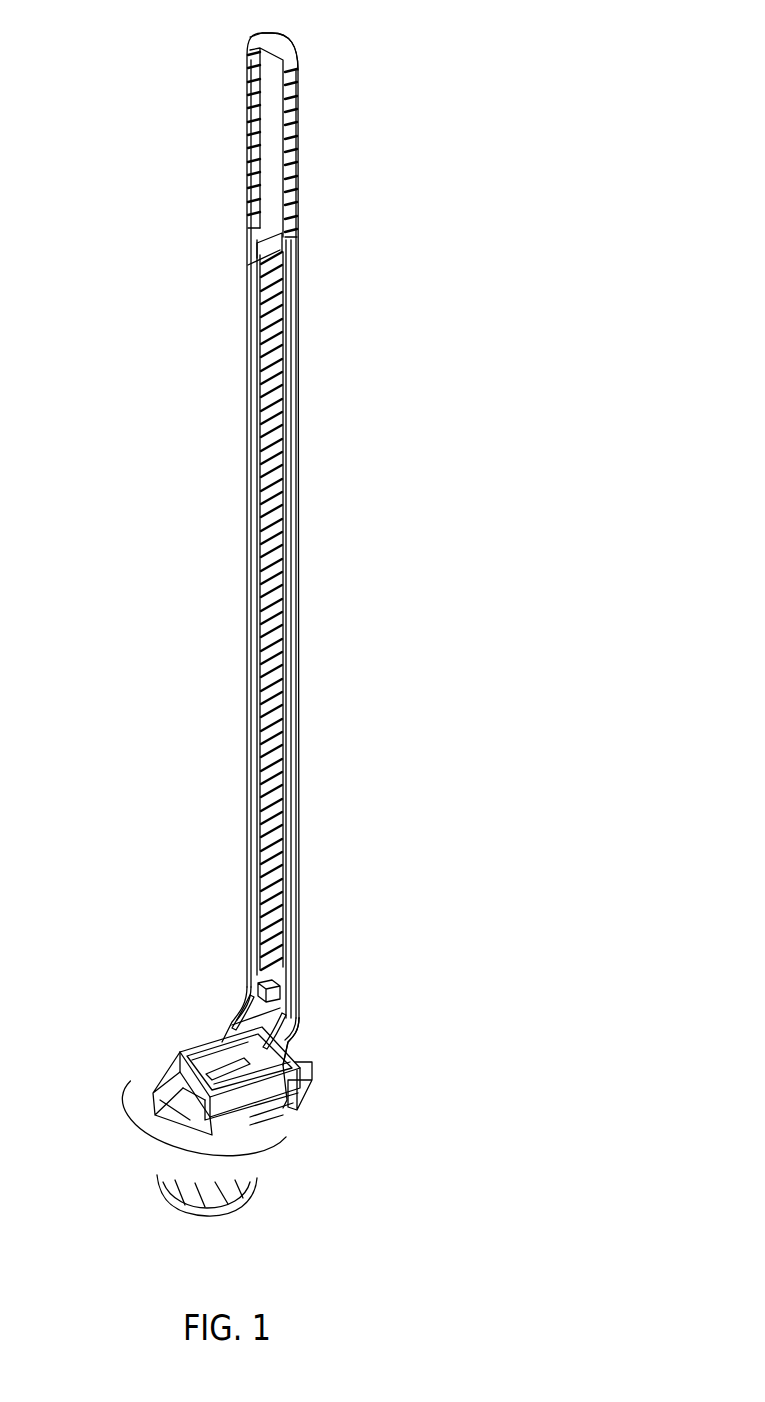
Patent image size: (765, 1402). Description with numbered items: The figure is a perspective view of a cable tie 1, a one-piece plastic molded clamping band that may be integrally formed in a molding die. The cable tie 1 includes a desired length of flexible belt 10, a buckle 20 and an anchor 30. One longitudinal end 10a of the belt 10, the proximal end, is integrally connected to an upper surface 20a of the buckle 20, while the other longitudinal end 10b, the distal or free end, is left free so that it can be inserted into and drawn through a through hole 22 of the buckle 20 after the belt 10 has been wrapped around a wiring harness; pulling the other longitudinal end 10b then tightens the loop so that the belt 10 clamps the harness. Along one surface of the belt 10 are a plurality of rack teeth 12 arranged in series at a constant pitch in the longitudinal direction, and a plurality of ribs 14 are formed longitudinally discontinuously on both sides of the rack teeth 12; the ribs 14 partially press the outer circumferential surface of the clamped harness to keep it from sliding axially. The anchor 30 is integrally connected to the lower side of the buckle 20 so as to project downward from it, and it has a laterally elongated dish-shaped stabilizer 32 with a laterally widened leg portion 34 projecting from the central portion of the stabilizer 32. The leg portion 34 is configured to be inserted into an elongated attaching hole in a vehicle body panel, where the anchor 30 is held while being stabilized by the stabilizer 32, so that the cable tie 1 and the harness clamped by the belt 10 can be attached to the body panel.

The cable tie 1 is at (364, 280).
The belt 10 is at (300, 597).
The one longitudinal end of the belt 10a is at (291, 1046).
The other longitudinal end of the belt 10b is at (256, 36).
The rack teeth 12 is at (270, 593).
The ribs 14 is at (283, 384).
The buckle 20 is at (284, 1124).
The upper surface of the buckle 20a is at (204, 1062).
The through hole 22 is at (200, 1098).
The anchor 30 is at (258, 1200).
The stabilizer 32 is at (137, 1113).
The leg portion 34 is at (201, 1205).